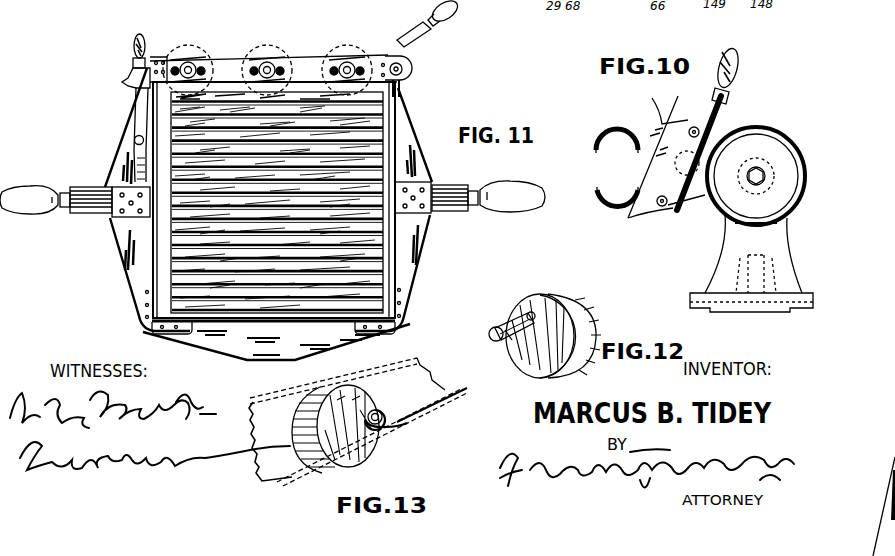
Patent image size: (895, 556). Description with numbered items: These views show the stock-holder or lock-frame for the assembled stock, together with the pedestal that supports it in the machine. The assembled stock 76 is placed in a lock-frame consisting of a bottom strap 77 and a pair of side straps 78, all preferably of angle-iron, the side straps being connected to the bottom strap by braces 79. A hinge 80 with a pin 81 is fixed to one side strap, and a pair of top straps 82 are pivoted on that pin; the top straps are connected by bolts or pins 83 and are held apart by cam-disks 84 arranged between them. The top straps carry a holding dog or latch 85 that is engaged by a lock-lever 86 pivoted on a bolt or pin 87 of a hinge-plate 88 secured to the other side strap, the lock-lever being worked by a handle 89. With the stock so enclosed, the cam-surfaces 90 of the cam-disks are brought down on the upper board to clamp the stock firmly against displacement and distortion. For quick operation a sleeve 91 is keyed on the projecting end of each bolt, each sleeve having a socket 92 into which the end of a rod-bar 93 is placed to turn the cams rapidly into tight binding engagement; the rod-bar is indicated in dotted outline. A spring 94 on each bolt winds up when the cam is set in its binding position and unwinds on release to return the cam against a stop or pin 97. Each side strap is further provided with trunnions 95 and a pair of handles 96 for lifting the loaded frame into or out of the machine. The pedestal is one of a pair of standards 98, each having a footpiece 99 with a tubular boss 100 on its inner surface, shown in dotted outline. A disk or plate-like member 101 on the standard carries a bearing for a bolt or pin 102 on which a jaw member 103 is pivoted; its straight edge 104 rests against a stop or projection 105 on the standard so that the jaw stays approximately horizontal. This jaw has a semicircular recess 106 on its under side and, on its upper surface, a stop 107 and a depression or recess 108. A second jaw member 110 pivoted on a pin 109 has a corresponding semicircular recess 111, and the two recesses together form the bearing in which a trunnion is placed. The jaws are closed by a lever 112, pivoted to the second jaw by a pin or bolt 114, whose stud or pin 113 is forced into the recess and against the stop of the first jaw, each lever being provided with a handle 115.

In FIG. 11, the stock 76 is at (362, 140).
In FIG. 11, the bottom strap 77 is at (230, 350).
In FIG. 11, the side straps 78 is at (118, 170).
In FIG. 11, the braces 79 is at (164, 340).
In FIG. 11, the hinge 80 is at (410, 76).
In FIG. 11, the pin 81 is at (404, 66).
In FIG. 11, the top straps 82 is at (310, 52).
In FIG. 13, the top straps 82 is at (280, 400).
In FIG. 11, the bolts or pins 83 is at (186, 62).
In FIG. 12, the bolts or pins 83 is at (489, 332).
In FIG. 13, the bolts or pins 83 is at (382, 410).
In FIG. 11, the cam-disks 84 is at (192, 62).
In FIG. 12, the cam-disks 84 is at (543, 296).
In FIG. 13, the cam-disks 84 is at (350, 392).
In FIG. 11, the holding dog or latch 85 is at (124, 81).
In FIG. 11, the lock-lever 86 is at (146, 108).
In FIG. 11, the bolt or pin 87 is at (134, 139).
In FIG. 11, the hinge-plate 88 is at (134, 150).
In FIG. 11, the handle 89 is at (141, 33).
In FIG. 11, the cam-surfaces 90 is at (205, 50).
In FIG. 12, the cam-surfaces 90 is at (582, 306).
In FIG. 13, the cam-surfaces 90 is at (296, 428).
In FIG. 11, the sleeve 91 is at (178, 66).
In FIG. 12, the sleeve 91 is at (510, 345).
In FIG. 11, the socket 92 is at (204, 66).
In FIG. 12, the socket 92 is at (518, 318).
In FIG. 11, the rod-bar 93 is at (405, 43).
In FIG. 13, the spring 94 is at (390, 430).
In FIG. 11, the trunnions 95 is at (478, 187).
In FIG. 11, the handles 96 is at (526, 185).
In FIG. 11, the stop or pin 97 is at (290, 72).
In FIG. 10, the standard 98 is at (753, 254).
In FIG. 10, the footpiece 99 is at (696, 307).
In FIG. 10, the tubular boss 100 is at (742, 268).
In FIG. 10, the disk or plate-like member 101 is at (760, 135).
In FIG. 10, the bolt or pin 102 is at (762, 168).
In FIG. 10, the jaw member 103 is at (720, 135).
In FIG. 10, the straight edge 104 is at (698, 200).
In FIG. 10, the stop or projection 105 is at (714, 210).
In FIG. 10, the semicircular recess 106 is at (617, 144).
In FIG. 10, the stop 107 is at (660, 125).
In FIG. 10, the depression or recess 108 is at (668, 122).
In FIG. 10, the pin 109 is at (675, 164).
In FIG. 10, the second jaw member 110 is at (638, 212).
In FIG. 10, the semicircular recess 111 is at (620, 172).
In FIG. 10, the lever 112 is at (712, 120).
In FIG. 10, the stud or pin 113 is at (690, 128).
In FIG. 10, the pin or bolt 114 is at (663, 208).
In FIG. 10, the handle 115 is at (738, 56).